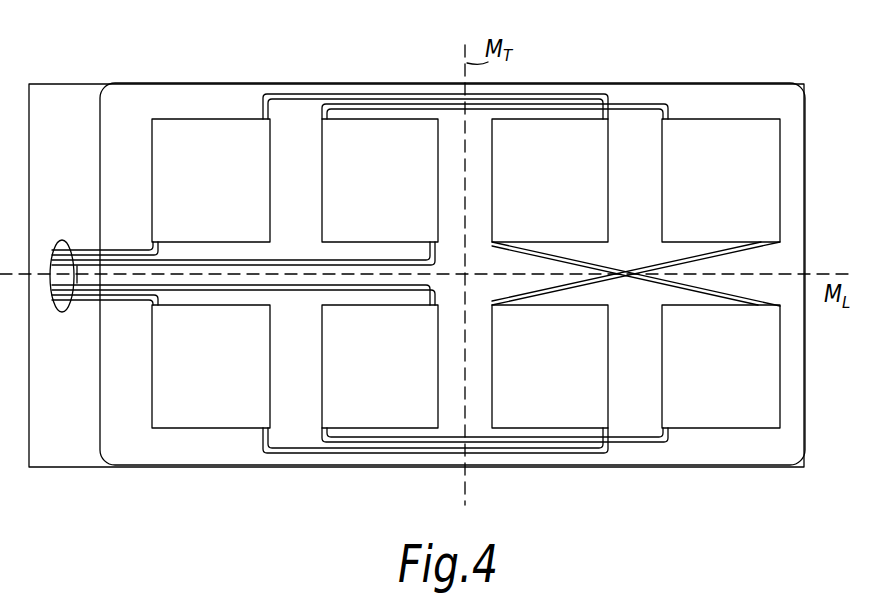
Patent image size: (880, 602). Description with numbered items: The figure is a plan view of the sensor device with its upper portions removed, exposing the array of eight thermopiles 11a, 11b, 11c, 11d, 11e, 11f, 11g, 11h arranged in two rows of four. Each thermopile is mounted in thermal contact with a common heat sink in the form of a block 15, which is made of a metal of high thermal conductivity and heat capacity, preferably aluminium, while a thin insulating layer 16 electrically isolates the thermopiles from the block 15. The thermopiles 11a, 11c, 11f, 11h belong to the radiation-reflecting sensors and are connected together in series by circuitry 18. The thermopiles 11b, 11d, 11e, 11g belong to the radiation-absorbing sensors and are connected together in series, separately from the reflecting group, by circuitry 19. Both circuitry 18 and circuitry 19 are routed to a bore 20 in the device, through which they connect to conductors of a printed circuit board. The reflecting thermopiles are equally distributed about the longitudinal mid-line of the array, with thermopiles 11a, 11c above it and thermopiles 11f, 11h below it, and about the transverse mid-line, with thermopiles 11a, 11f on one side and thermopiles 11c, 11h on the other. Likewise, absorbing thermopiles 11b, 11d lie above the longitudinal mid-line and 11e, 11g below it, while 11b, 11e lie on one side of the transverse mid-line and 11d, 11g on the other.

The thermopile 11a is at (211, 180).
The thermopile 11b is at (380, 180).
The thermopile 11c is at (550, 180).
The thermopile 11d is at (721, 180).
The thermopile 11e is at (211, 366).
The thermopile 11f is at (380, 366).
The thermopile 11g is at (550, 366).
The thermopile 11h is at (721, 366).
The block 15 is at (143, 98).
The thin insulating layer 16 is at (635, 103).
The circuitry 18 is at (294, 98).
The circuitry 19 is at (296, 258).
The bore 20 is at (67, 240).